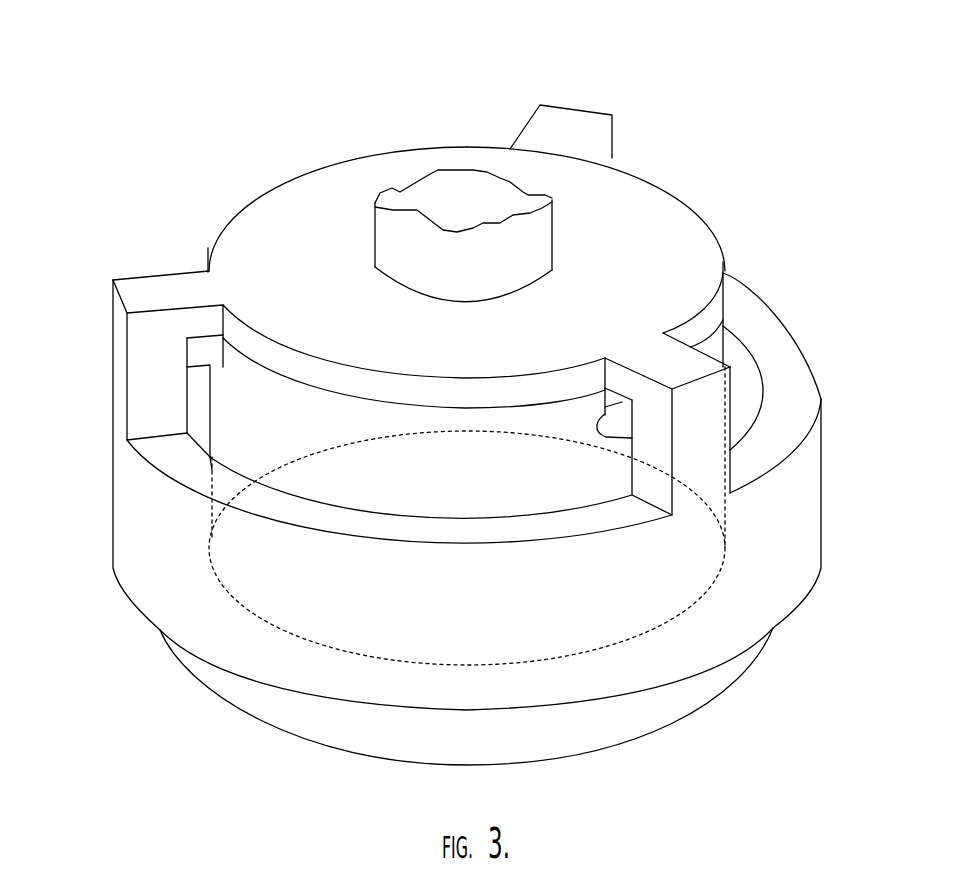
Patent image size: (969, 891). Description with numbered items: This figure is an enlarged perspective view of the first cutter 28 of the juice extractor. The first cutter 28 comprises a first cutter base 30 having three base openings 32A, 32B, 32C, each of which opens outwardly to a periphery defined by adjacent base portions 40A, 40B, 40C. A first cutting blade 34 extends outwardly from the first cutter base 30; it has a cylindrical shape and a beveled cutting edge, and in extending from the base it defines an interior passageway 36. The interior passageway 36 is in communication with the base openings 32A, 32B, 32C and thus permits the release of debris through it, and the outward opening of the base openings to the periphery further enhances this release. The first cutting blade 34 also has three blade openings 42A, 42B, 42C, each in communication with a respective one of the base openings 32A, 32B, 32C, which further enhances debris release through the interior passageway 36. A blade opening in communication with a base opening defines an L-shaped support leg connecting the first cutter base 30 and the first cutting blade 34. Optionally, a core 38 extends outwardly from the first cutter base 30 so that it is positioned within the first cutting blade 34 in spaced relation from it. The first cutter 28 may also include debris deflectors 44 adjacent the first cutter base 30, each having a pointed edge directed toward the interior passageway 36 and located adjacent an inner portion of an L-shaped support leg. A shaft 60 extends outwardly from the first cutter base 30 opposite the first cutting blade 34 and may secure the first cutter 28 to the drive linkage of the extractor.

The first cutter 28 is at (727, 70).
The first cutter base 30 is at (542, 175).
The base opening 32A is at (315, 372).
The base opening 32B is at (243, 189).
The base opening 32C is at (690, 167).
The first cutting blade 34 is at (823, 526).
The interior passageway 36 is at (198, 430).
The core 38 is at (730, 518).
The base portion 40A is at (163, 292).
The base portion 40B is at (538, 103).
The base portion 40C is at (730, 367).
The blade opening 42A is at (267, 450).
The blade opening 42B is at (165, 262).
The blade opening 42C is at (730, 297).
The debris deflector 44 is at (190, 363).
The shaft 60 is at (375, 218).